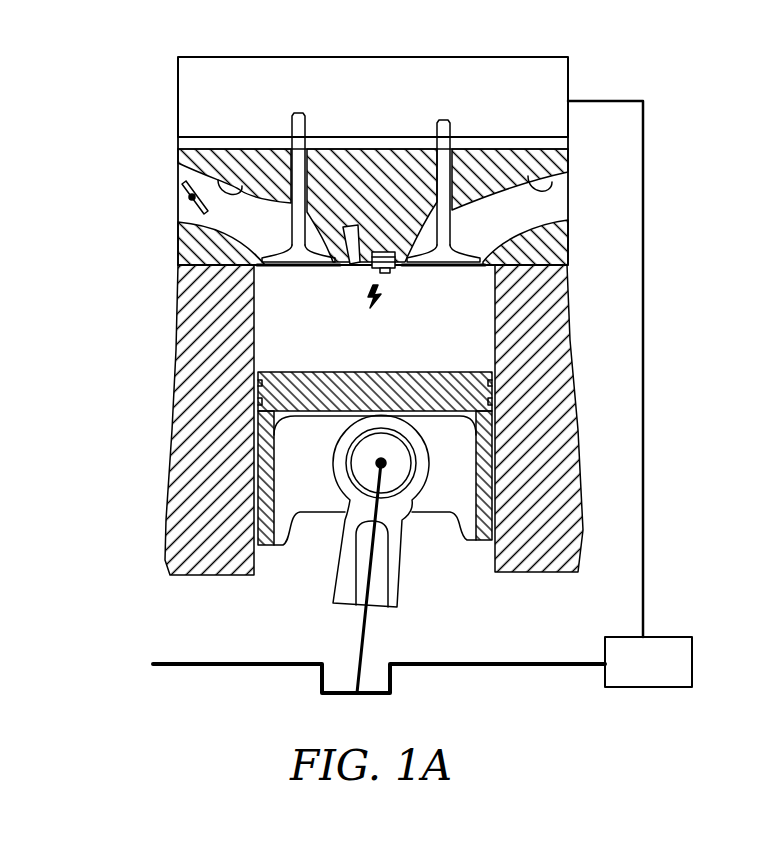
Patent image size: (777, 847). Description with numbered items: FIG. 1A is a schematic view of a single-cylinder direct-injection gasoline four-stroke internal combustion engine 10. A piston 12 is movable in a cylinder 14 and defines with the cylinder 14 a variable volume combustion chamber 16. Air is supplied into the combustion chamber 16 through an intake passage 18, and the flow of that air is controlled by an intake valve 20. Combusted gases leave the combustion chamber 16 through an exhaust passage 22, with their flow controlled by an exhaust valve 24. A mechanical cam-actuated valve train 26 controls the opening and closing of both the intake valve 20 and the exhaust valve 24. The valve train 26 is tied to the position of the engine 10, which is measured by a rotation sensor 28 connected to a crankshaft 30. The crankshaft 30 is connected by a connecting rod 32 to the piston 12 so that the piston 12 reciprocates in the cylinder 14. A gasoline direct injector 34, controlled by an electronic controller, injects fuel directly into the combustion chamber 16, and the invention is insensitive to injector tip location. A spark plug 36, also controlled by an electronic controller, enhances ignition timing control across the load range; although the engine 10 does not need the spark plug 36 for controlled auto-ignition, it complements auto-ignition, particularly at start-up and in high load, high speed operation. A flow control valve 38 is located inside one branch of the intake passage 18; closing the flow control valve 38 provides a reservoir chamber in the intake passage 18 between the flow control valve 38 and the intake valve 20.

The internal combustion engine 10 is at (153, 85).
The piston 12 is at (265, 395).
The cylinder 14 is at (255, 345).
The variable volume combustion chamber 16 is at (470, 345).
The intake passage 18 is at (178, 163).
The intake valve 20 is at (300, 268).
The exhaust passage 22 is at (560, 188).
The exhaust valve 24 is at (478, 268).
The mechanical cam-actuated valve train 26 is at (389, 112).
The rotation sensor 28 is at (663, 645).
The crankshaft 30 is at (321, 683).
The connecting rod 32 is at (343, 570).
The gasoline direct injector 34 is at (350, 268).
The spark plug 36 is at (395, 277).
The flow control valve 38 is at (180, 186).